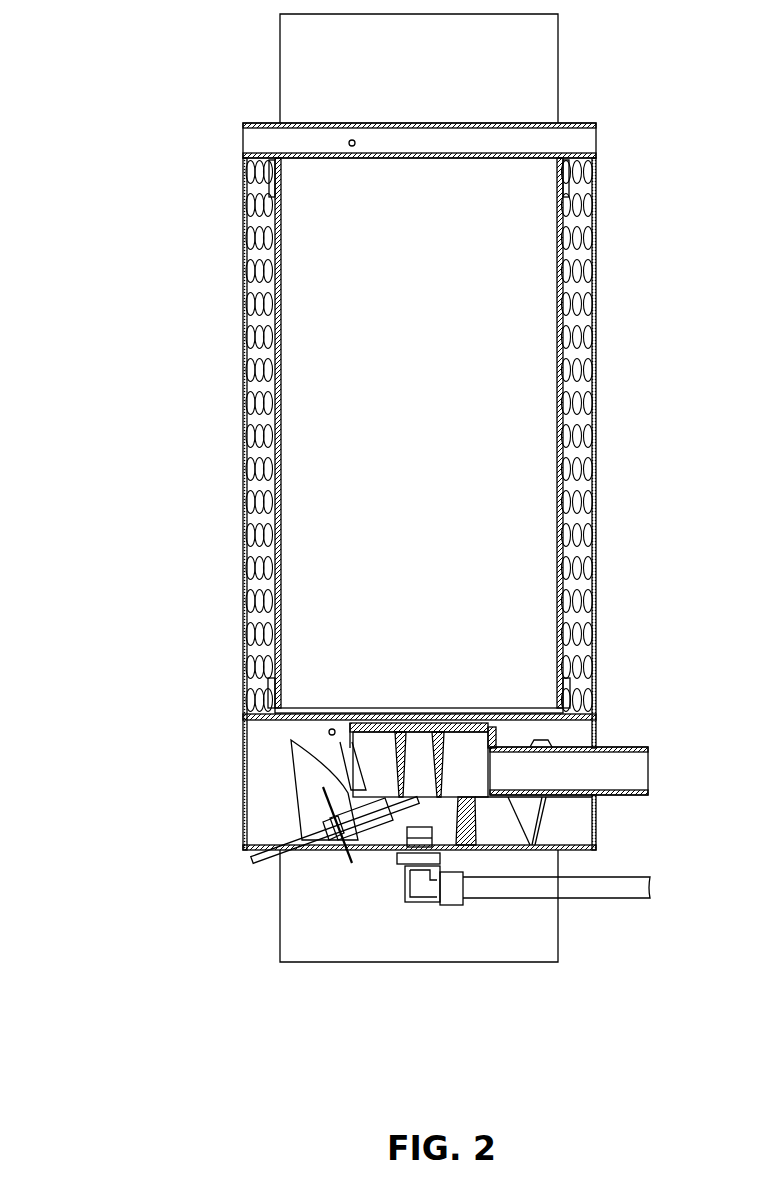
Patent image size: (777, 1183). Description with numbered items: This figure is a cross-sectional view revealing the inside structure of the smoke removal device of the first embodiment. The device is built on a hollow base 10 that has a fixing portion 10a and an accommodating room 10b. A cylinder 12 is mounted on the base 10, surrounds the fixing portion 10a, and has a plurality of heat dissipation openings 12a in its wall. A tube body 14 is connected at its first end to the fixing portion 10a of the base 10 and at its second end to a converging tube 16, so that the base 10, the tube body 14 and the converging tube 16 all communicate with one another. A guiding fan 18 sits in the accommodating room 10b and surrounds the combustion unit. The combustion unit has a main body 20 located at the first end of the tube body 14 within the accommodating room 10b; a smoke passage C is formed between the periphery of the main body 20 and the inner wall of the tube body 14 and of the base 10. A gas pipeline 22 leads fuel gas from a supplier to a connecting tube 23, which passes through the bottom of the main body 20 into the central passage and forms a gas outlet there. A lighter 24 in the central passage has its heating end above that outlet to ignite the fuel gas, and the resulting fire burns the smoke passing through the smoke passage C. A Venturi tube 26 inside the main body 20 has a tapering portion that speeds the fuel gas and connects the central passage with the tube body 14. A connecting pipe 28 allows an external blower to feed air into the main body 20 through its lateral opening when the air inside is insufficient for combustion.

The base 10 is at (72, 656).
The fixing portion 10a is at (270, 700).
The accommodating room 10b is at (270, 766).
The cylinder 12 is at (597, 218).
The heat dissipation openings 12a is at (578, 272).
The tube body 14 is at (557, 355).
The converging tube 16 is at (594, 187).
The smoke passage C is at (510, 585).
The guiding fan 18 is at (290, 803).
The main body 20 is at (470, 818).
The gas pipeline 22 is at (505, 898).
The connecting tube 23 is at (427, 903).
The lighter 24 is at (318, 848).
The Venturi tube 26 is at (432, 762).
The connecting pipe 28 is at (626, 747).